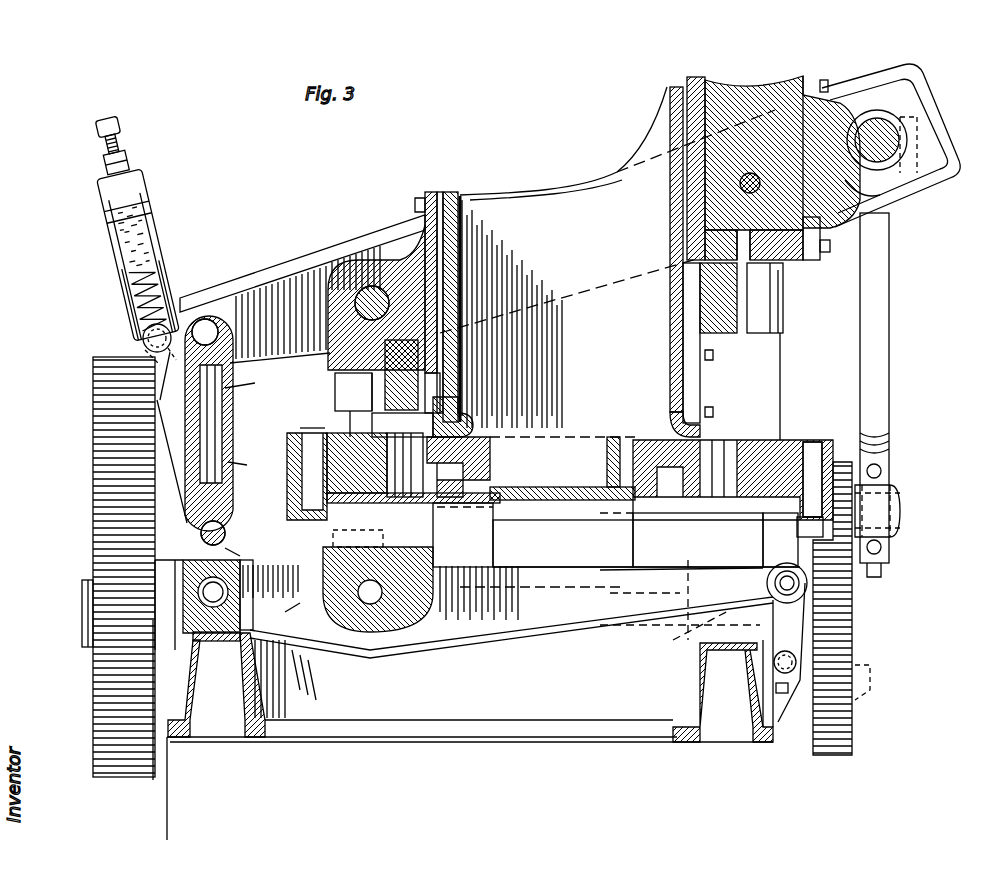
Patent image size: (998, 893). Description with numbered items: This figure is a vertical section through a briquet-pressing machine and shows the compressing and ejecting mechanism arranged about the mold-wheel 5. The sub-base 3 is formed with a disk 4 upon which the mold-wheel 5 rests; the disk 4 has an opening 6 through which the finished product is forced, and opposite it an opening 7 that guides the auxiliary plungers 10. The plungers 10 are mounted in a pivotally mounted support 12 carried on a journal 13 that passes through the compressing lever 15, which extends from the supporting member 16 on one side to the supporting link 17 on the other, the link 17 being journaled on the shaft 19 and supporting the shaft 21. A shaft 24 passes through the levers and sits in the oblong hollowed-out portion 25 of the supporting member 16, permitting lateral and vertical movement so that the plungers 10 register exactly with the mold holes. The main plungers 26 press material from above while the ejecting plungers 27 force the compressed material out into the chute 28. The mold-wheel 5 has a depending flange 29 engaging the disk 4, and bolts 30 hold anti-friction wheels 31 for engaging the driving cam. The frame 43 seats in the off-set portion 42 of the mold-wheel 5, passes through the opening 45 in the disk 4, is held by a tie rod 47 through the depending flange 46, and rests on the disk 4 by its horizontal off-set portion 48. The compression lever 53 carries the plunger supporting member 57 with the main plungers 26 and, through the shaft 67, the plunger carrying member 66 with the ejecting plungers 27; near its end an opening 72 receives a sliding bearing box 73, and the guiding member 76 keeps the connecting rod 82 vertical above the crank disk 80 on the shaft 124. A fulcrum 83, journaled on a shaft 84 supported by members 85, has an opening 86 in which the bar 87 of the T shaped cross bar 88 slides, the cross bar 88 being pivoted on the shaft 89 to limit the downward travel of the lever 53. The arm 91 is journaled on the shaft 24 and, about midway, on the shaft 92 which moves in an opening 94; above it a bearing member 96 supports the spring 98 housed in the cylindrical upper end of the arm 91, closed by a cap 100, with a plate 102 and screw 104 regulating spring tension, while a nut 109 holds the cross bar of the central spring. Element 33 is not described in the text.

The sub-base 3 is at (668, 660).
The disk 4 is at (681, 576).
The mold-wheel 5 is at (760, 445).
The opening 6 is at (733, 428).
The opening 7 is at (505, 725).
The plungers 10 is at (425, 545).
The pivotally mounted support 12 is at (352, 603).
The journal 13 is at (400, 598).
The compressing lever 15 is at (563, 543).
The supporting member 16 is at (260, 611).
The supporting link 17 is at (780, 540).
The shaft 19 is at (800, 660).
The shaft 21 is at (880, 581).
The shaft 24 is at (203, 602).
The hollowed-out portion 25 is at (298, 600).
The main plungers 26 is at (341, 398).
The ejecting plungers 27 is at (746, 333).
The chute 28 is at (511, 631).
The depending flange 29 is at (880, 502).
The bolts 30 is at (818, 428).
The anti-friction wheels 31 is at (533, 557).
The link 33 is at (787, 642).
The off-set portion 42 is at (458, 382).
The frame 43 is at (570, 314).
The opening 45 is at (646, 552).
The depending flange 46 is at (465, 535).
The tie rod 47 is at (562, 473).
The horizontal off-set portion 48 is at (495, 476).
The compression lever 53 is at (583, 182).
The plunger supporting member 57 is at (372, 265).
The plunger carrying member 66 is at (752, 86).
The shaft 67 is at (790, 262).
The openings 72 is at (897, 98).
The bearing box 73 is at (905, 112).
The guiding member 76 is at (890, 196).
The disk 80 is at (855, 608).
The connecting rod 82 is at (862, 322).
The fulcrum 83 is at (253, 423).
The shaft 84 is at (228, 542).
The members 85 is at (196, 558).
The opening 86 is at (201, 528).
The bar 87 is at (221, 434).
The T shaped cross bar 88 is at (302, 287).
The shaft 89 is at (218, 334).
The arm 91 is at (170, 437).
The shaft 92 is at (93, 374).
The opening 94 is at (152, 305).
The bearing member 96 is at (143, 338).
The spring 98 is at (135, 282).
The cap 100 is at (133, 181).
The plate 102 is at (100, 230).
The screw 104 is at (124, 138).
The nut 109 is at (108, 160).
The shaft 124 is at (82, 604).